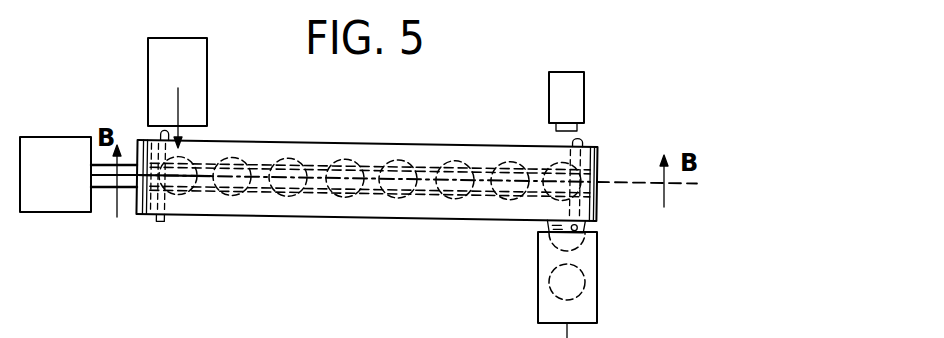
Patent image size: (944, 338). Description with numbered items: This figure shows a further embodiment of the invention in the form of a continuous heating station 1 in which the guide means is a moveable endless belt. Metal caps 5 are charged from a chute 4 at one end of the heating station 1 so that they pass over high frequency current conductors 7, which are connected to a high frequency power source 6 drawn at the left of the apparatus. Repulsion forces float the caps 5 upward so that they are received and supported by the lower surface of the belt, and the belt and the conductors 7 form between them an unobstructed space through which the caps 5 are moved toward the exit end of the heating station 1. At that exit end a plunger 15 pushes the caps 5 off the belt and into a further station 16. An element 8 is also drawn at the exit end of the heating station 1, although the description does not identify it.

The continuous heating station 1 is at (428, 125).
The chute 4 is at (199, 80).
The metal caps 5 is at (388, 158).
The high frequency power source 6 is at (43, 160).
The conductors 7 is at (485, 168).
The end plate 8 is at (602, 152).
The plunger 15 is at (578, 103).
The further station 16 is at (590, 294).